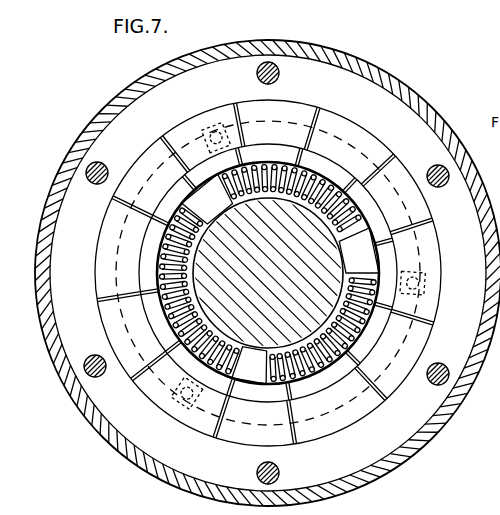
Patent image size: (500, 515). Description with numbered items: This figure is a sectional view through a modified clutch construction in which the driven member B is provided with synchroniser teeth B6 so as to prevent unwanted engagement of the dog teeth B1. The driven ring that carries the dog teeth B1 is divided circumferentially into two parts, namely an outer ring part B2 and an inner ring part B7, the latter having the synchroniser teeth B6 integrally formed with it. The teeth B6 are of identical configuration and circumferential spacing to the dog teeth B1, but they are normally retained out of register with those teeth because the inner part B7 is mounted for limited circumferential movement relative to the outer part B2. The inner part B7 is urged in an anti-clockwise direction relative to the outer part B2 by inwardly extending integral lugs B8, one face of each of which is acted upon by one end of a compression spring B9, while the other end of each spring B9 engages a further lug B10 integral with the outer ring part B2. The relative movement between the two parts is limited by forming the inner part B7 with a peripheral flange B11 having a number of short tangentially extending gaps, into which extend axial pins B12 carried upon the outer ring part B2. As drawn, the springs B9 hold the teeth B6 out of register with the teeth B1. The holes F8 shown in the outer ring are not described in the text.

The driven member B is at (268, 273).
The dog teeth B1 is at (318, 116).
The outer ring part B2 is at (383, 106).
The synchroniser teeth B6 is at (438, 258).
The inner ring part B7 is at (427, 217).
The inwardly extending lugs B8 is at (212, 250).
The compression springs B9 is at (277, 193).
The further lugs B10 is at (209, 223).
The peripheral flange B11 is at (157, 172).
The axial pins B12 is at (221, 125).
The bolt hole F8 is at (436, 170).